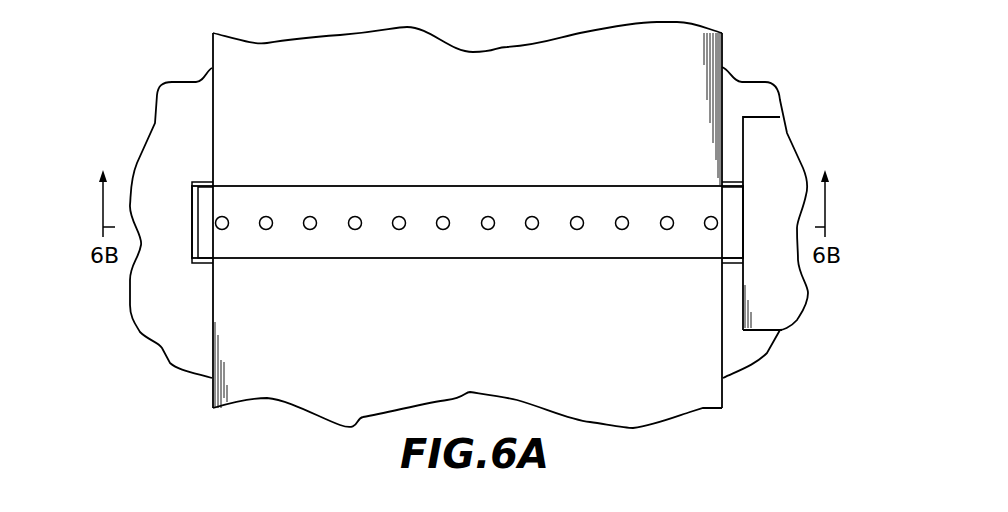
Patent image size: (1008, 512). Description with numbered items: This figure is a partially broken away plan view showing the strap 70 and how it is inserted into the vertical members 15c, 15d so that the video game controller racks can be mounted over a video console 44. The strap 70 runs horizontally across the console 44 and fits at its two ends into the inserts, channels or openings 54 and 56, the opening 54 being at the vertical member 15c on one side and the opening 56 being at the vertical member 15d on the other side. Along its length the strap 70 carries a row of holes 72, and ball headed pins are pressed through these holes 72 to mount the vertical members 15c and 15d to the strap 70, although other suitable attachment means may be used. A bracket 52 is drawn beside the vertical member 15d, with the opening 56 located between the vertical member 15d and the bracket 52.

The video console 44 is at (723, 396).
The vertical member 15c is at (177, 88).
The vertical member 15d is at (763, 90).
The bracket 52 is at (780, 140).
The insert, channel or opening 54 is at (199, 182).
The insert, channel or opening 56 is at (735, 182).
The strap 70 is at (468, 186).
The holes 72 is at (310, 216).